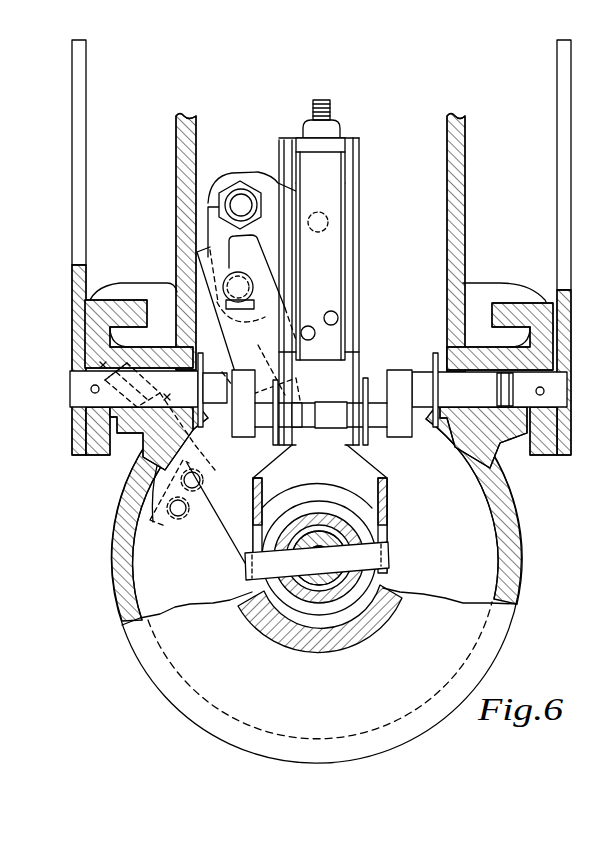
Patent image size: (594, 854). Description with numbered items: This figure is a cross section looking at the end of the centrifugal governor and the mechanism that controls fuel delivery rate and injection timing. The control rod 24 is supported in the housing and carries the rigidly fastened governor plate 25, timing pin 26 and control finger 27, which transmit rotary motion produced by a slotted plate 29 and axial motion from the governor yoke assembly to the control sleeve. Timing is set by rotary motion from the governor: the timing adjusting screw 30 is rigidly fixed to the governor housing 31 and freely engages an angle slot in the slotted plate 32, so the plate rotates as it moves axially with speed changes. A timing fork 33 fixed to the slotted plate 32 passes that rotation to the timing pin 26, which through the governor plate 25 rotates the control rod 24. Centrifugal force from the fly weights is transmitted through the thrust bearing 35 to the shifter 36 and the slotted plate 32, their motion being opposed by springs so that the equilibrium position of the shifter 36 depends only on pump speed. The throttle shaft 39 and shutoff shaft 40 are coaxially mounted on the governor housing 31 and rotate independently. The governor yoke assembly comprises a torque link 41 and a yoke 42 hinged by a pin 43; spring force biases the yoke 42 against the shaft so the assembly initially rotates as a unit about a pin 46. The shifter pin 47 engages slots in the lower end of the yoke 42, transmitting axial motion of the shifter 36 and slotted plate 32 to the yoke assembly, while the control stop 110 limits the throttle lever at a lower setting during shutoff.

The control rod 24 is at (240, 200).
The governor plate 25 is at (272, 176).
The timing pin 26 is at (248, 283).
The control finger 27 is at (333, 218).
The slotted plate 29 is at (155, 523).
The timing adjusting screw 30 is at (170, 398).
The governor housing 31 is at (125, 598).
The slotted plate 32 is at (198, 430).
The timing fork 33 is at (275, 308).
The thrust bearing 35 is at (291, 610).
The shifter 36 is at (324, 603).
The throttle shaft 39 is at (70, 389).
The shutoff shaft 40 is at (552, 386).
The torque link 41 is at (360, 344).
The governor yoke 42 is at (350, 452).
The pin 43 is at (360, 187).
The pin 46 is at (326, 428).
The shifter pin 47 is at (246, 575).
The control stop 110 is at (98, 310).